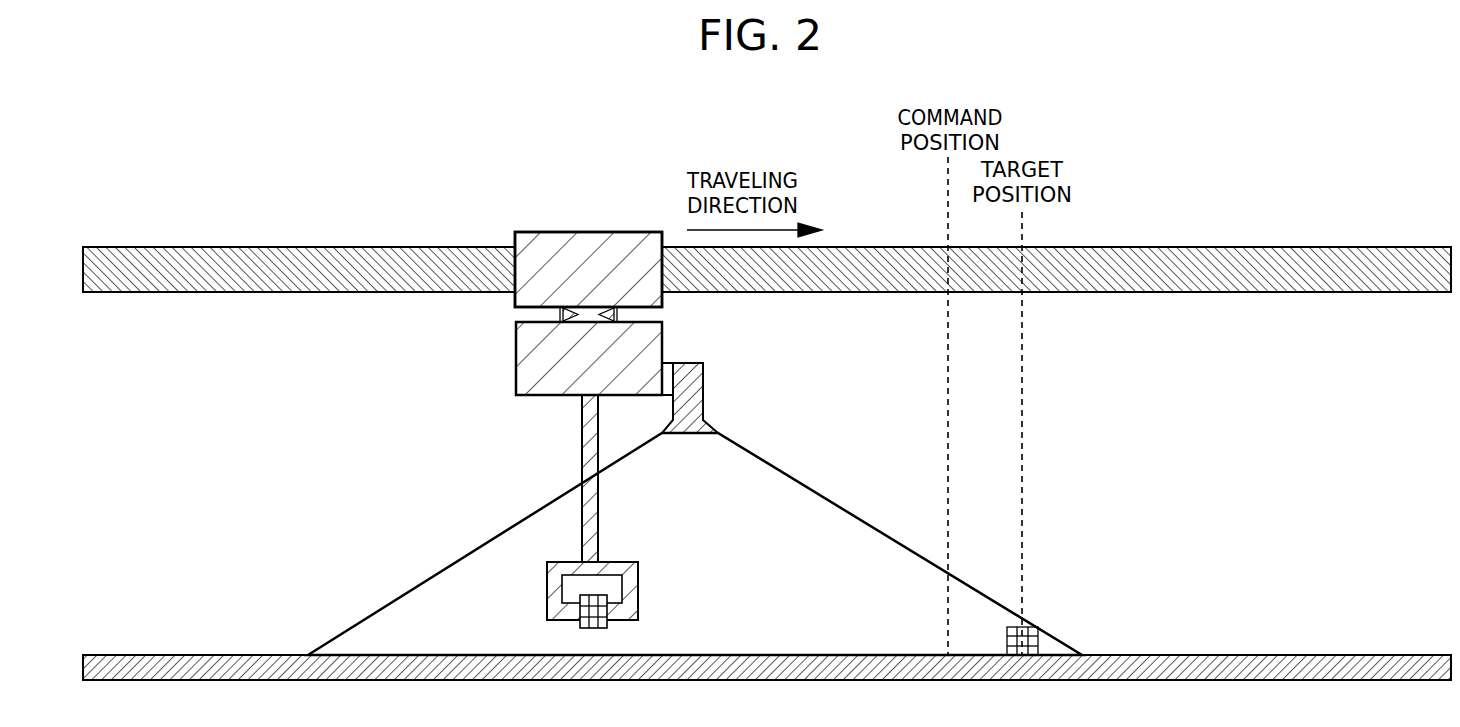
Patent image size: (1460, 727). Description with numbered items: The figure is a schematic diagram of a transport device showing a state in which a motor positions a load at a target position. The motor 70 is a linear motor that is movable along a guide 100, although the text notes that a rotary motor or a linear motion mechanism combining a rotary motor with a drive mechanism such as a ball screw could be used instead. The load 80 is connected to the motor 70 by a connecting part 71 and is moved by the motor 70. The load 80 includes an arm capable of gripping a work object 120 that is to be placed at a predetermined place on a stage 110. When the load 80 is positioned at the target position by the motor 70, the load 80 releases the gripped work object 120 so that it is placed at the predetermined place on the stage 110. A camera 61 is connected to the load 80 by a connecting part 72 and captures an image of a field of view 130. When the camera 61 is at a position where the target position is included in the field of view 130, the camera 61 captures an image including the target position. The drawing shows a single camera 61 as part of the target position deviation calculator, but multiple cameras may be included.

The guide 100 is at (290, 247).
The stage 110 is at (200, 655).
The field of view 130 is at (783, 492).
The motor 70 is at (582, 231).
The connecting part 71 is at (560, 313).
The load 80 is at (662, 330).
The connecting part 72 is at (675, 357).
The camera 61 is at (703, 393).
The work object 120 is at (563, 600).